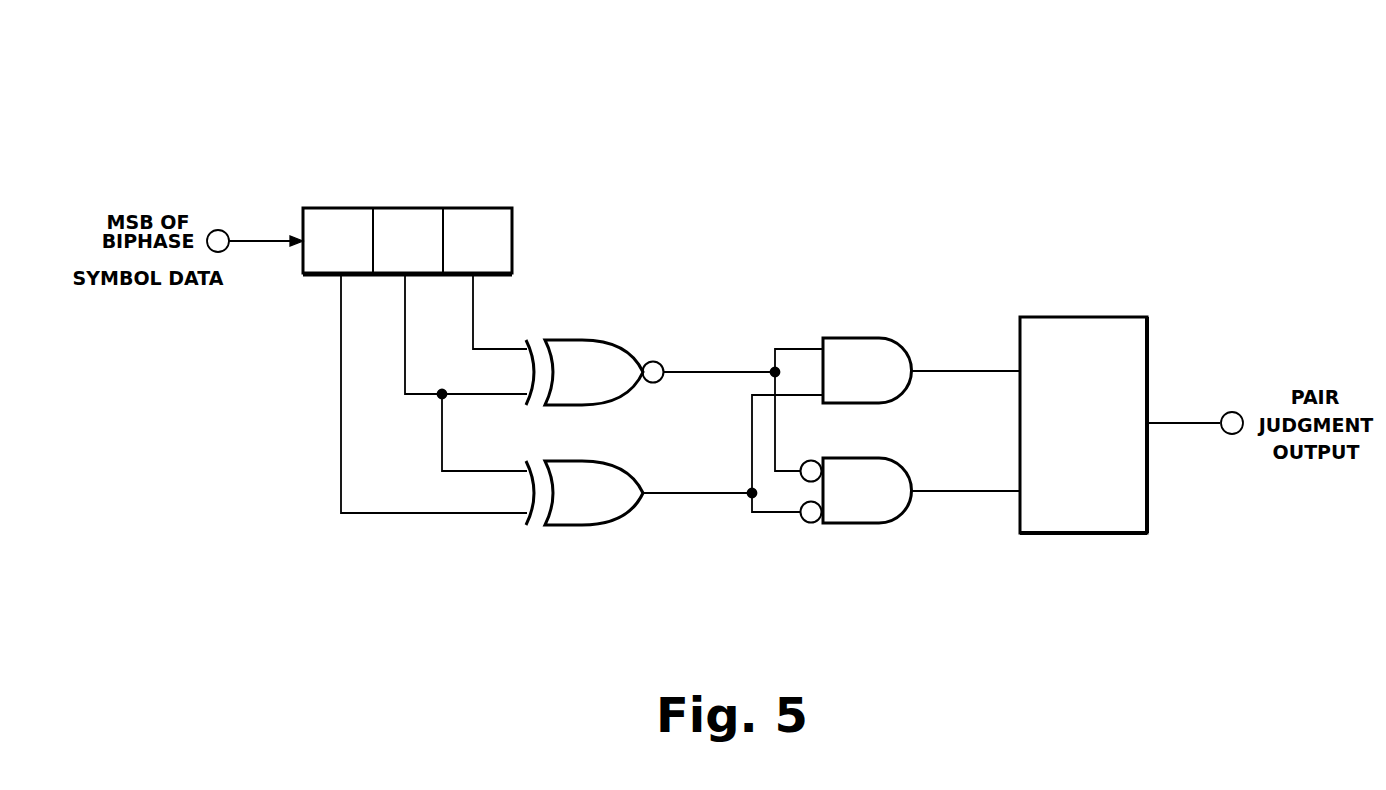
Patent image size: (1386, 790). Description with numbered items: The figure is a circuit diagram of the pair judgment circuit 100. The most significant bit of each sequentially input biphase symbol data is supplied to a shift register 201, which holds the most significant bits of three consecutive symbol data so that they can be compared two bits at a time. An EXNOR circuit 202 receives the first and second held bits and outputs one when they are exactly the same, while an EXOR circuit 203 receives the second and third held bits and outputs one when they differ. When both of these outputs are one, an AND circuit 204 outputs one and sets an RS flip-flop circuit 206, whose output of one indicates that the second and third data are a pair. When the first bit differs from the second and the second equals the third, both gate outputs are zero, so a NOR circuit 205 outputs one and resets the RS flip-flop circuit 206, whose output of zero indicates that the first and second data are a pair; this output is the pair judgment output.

The pair judgment circuit 100 is at (1013, 112).
The shift register 201 is at (410, 215).
The EXNOR circuit 202 is at (592, 350).
The EXOR circuit 203 is at (583, 516).
The AND circuit 204 is at (872, 345).
The NOR circuit 205 is at (853, 520).
The RS flip-flop circuit 206 is at (1088, 327).